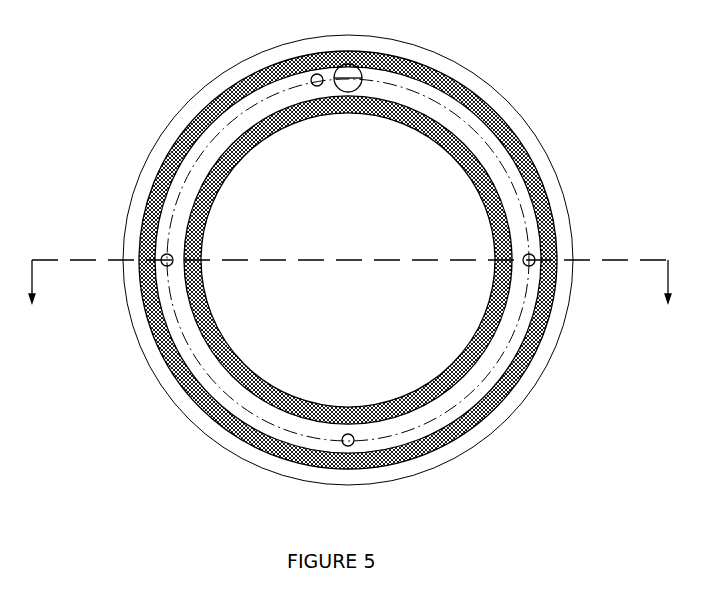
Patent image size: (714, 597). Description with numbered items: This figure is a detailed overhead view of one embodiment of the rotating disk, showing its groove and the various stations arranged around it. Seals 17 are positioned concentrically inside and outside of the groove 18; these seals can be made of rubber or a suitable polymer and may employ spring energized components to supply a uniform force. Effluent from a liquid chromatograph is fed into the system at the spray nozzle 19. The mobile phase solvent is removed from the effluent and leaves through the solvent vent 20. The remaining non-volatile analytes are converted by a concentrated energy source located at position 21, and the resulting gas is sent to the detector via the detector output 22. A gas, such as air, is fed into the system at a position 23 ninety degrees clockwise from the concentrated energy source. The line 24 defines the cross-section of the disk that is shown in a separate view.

The seals 17 is at (496, 362).
The groove 18 is at (178, 348).
The spray nozzle 19 is at (358, 454).
The solvent vent 20 is at (152, 254).
The concentrated energy source 21 is at (368, 68).
The detector output 22 is at (305, 71).
The gas feed position 23 is at (542, 252).
The cross-section line 24 is at (344, 297).